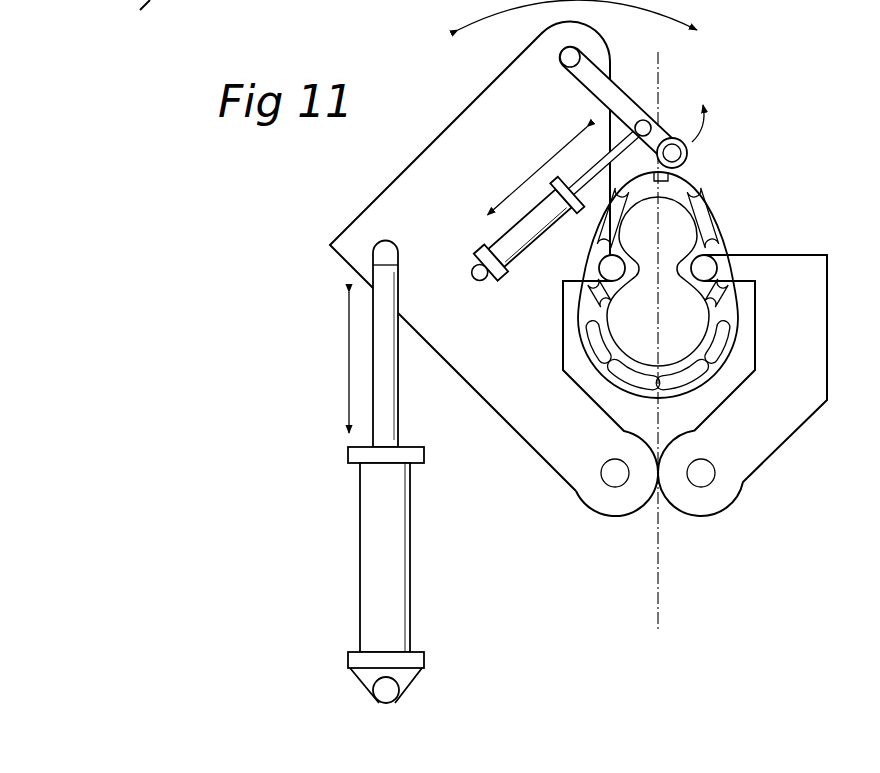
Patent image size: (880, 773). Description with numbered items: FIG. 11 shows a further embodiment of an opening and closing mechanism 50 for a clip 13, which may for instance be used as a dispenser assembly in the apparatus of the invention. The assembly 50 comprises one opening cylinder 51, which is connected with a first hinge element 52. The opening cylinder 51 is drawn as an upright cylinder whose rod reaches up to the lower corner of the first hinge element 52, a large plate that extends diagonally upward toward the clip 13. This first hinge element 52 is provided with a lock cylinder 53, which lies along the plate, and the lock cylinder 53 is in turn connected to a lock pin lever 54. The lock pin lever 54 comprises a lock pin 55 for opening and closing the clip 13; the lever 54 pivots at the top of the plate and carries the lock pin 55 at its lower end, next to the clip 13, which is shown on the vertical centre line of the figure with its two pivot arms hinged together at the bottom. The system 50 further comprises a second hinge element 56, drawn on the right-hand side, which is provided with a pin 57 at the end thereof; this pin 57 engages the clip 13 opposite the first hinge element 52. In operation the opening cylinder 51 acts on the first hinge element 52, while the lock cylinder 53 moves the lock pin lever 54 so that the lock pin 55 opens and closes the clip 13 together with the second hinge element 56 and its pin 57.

The clip 13 is at (737, 212).
The opening and closing mechanism 50 is at (333, 350).
The opening cylinder 51 is at (378, 583).
The first hinge element 52 is at (383, 212).
The lock cylinder 53 is at (512, 238).
The lock pin lever 54 is at (623, 95).
The lock pin 55 is at (680, 163).
The second hinge element 56 is at (753, 455).
The pin 57 is at (703, 272).